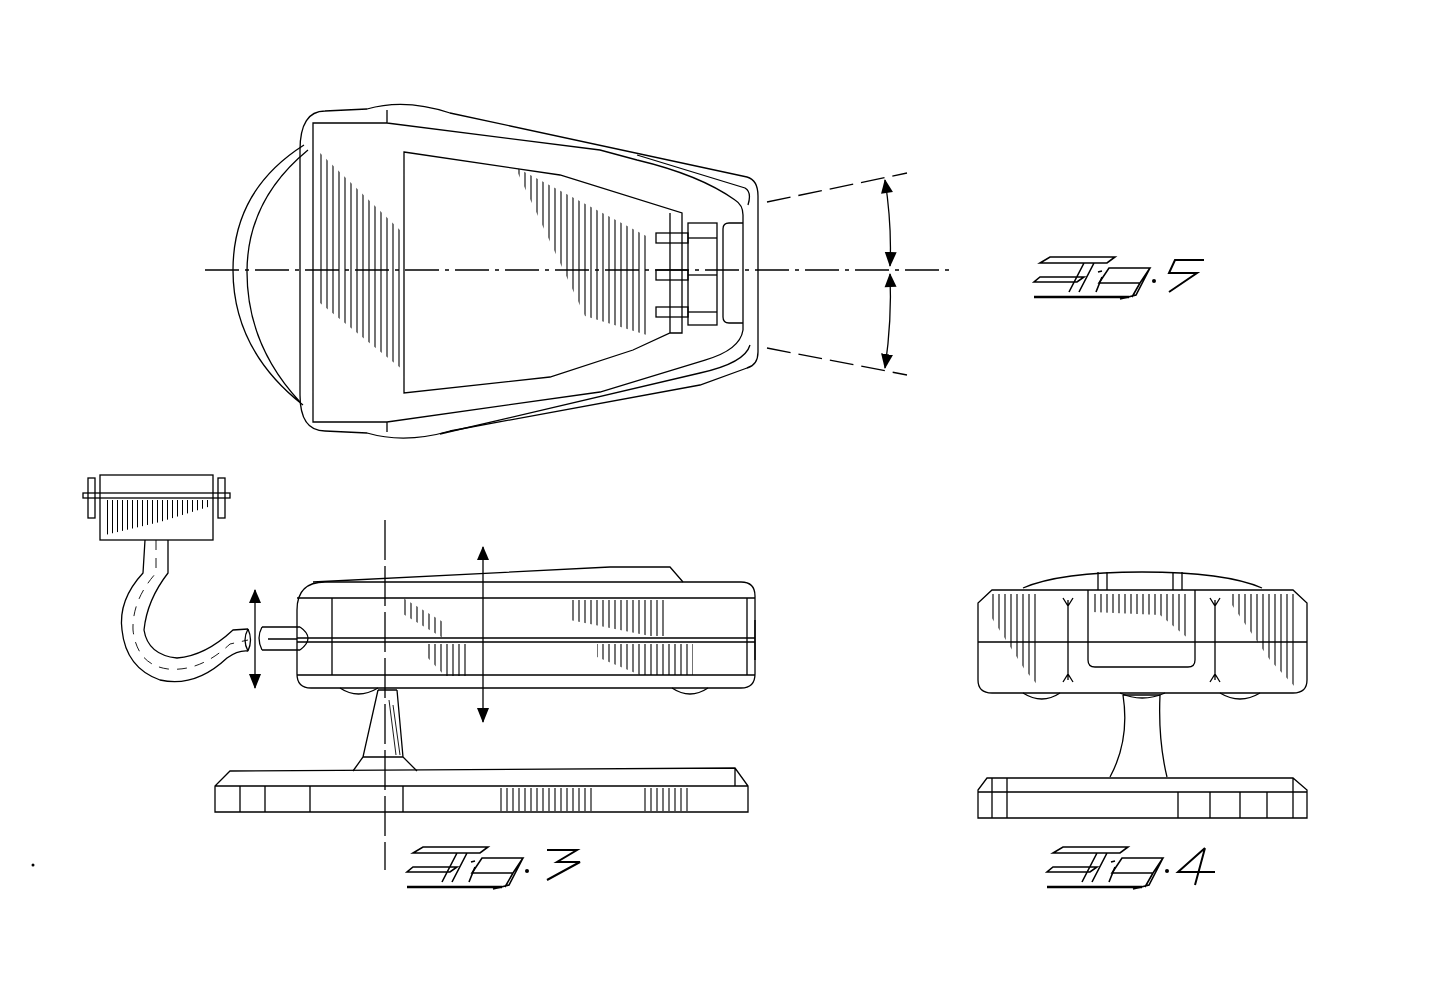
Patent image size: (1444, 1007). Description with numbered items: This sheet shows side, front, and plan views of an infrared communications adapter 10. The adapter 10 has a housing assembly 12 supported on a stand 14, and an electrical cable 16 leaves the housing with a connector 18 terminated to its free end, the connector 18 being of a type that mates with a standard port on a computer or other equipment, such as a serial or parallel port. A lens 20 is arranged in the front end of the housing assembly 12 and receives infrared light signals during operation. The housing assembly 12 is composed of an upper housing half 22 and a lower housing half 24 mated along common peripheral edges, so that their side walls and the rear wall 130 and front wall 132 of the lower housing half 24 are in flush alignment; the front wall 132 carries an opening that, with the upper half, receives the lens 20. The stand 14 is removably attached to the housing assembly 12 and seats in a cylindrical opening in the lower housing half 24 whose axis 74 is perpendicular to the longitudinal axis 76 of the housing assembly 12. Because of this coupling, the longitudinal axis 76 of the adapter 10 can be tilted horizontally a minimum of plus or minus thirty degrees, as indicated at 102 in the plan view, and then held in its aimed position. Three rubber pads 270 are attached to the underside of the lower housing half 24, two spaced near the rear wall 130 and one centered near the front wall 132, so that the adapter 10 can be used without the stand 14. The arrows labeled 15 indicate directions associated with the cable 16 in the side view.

In FIG. 5, the infrared communications adapter 10 is at (699, 110).
In FIG. 3, the infrared communications adapter 10 is at (703, 552).
In FIG. 4, the infrared communications adapter 10 is at (1214, 560).
In FIG. 5, the housing assembly 12 is at (522, 122).
In FIG. 3, the housing assembly 12 is at (736, 585).
In FIG. 4, the housing assembly 12 is at (1365, 555).
In FIG. 5, the stand 14 is at (707, 384).
In FIG. 3, the stand 14 is at (622, 800).
In FIG. 4, the stand 14 is at (1311, 806).
In FIG. 3, the cable axis direction arrow 15 is at (368, 652).
In FIG. 3, the electrical cable 16 is at (135, 663).
In FIG. 3, the connector 18 is at (210, 405).
In FIG. 5, the lens 20 is at (758, 302).
In FIG. 4, the lens 20 is at (1142, 616).
In FIG. 3, the upper housing half 22 is at (650, 507).
In FIG. 3, the lower housing half 24 is at (541, 664).
In FIG. 3, the axis 74 is at (378, 689).
In FIG. 5, the longitudinal axis 76 is at (453, 272).
In FIG. 5, the horizontal tilt angle 102 is at (890, 232).
In FIG. 3, the rear wall 130 is at (292, 673).
In FIG. 3, the front wall 132 is at (758, 655).
In FIG. 3, the rubber pads 270 is at (354, 696).
In FIG. 4, the rubber pads 270 is at (1033, 700).